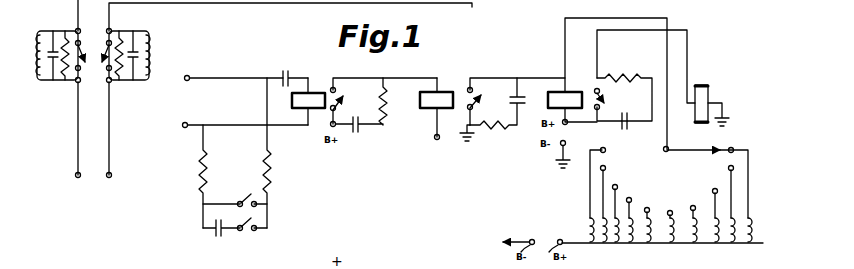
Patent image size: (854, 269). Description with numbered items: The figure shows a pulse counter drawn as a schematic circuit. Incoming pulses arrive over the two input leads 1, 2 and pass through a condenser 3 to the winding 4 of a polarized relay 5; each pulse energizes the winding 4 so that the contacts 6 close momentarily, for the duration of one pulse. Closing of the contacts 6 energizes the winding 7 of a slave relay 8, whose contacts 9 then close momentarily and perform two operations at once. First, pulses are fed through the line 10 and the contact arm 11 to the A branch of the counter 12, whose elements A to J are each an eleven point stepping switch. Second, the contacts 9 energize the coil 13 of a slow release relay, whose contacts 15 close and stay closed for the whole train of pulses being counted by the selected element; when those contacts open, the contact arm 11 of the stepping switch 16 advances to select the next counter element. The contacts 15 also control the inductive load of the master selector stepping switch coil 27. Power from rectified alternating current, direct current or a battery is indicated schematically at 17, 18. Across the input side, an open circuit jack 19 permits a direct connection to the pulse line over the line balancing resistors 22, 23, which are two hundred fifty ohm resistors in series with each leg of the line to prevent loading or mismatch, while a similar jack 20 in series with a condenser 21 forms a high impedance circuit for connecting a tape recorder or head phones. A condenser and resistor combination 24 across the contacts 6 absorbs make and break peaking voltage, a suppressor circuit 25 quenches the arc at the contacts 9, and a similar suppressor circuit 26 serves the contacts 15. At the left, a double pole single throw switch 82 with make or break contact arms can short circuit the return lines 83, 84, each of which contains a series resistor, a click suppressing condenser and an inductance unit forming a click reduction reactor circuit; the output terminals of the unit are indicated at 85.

The input lead 1 is at (199, 78).
The input lead 2 is at (200, 125).
The condenser 3 is at (291, 72).
The winding 4 is at (300, 104).
The polarized relay 5 is at (323, 80).
The contacts 6 is at (340, 87).
The winding 7 is at (429, 108).
The slave relay 8 is at (462, 98).
The contacts 9 is at (478, 92).
The line 10 is at (563, 40).
The contact arm 11 is at (695, 149).
The counter 12 is at (722, 210).
The coil 13 is at (554, 98).
The contacts 15 is at (604, 109).
The stepping switch 16 is at (672, 198).
The power source terminal 17 is at (560, 239).
The power source terminal 18 is at (534, 239).
The open circuit jack 19 is at (250, 197).
The jack 20 is at (251, 236).
The condenser 21 is at (213, 238).
The line balancing resistor 22 is at (275, 166).
The line balancing resistor 23 is at (197, 170).
The condenser and resistor combination 24 is at (376, 118).
The suppressor circuit 25 is at (514, 113).
The suppressor circuit 26 is at (644, 116).
The master selector stepping switch coil 27 is at (702, 98).
The double pole single throw switch 82 is at (106, 50).
The return line 83 is at (63, 78).
The return line 84 is at (139, 78).
The output terminals 85 is at (107, 178).